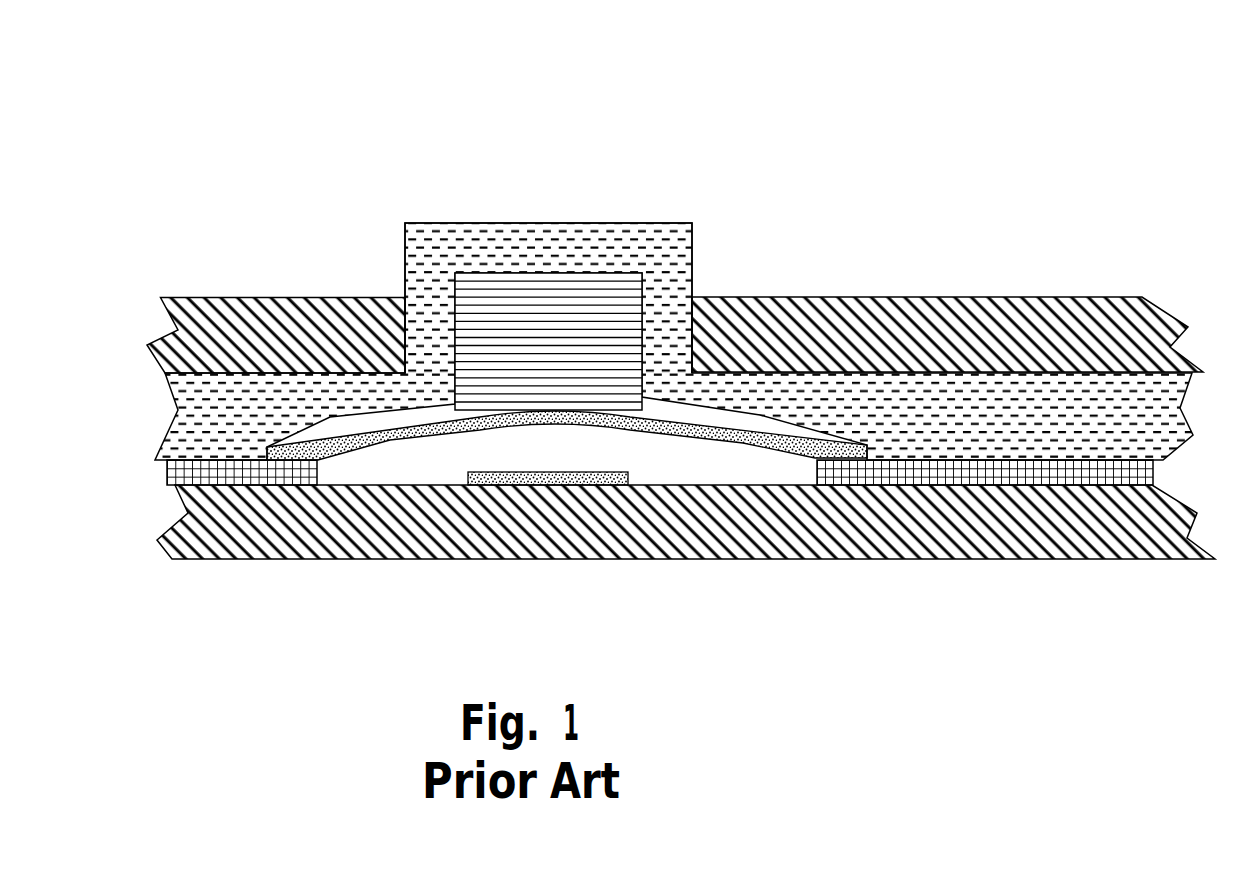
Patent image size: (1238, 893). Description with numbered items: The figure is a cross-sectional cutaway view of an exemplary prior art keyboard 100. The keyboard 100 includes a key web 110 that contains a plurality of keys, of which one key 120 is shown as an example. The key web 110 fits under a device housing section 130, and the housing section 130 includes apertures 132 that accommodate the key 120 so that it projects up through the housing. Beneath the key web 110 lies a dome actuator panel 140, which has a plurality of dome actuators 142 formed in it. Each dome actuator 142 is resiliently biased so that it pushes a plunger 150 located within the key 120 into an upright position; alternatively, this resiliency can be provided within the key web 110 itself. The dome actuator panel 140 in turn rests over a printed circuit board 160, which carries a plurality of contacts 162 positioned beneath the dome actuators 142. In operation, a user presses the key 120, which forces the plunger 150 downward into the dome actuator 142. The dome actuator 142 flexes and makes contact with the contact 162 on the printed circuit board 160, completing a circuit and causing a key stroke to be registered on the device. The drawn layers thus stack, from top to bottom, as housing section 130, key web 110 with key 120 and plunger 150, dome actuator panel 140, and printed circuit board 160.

The keyboard 100 is at (643, 315).
The key web 110 is at (172, 415).
The key 120 is at (405, 242).
The device housing section 130 is at (147, 345).
The aperture 132 is at (692, 297).
The dome actuator panel 140 is at (168, 471).
The dome actuator 142 is at (613, 425).
The plunger 150 is at (550, 283).
The printed circuit board 160 is at (160, 537).
The contact 162 is at (542, 477).